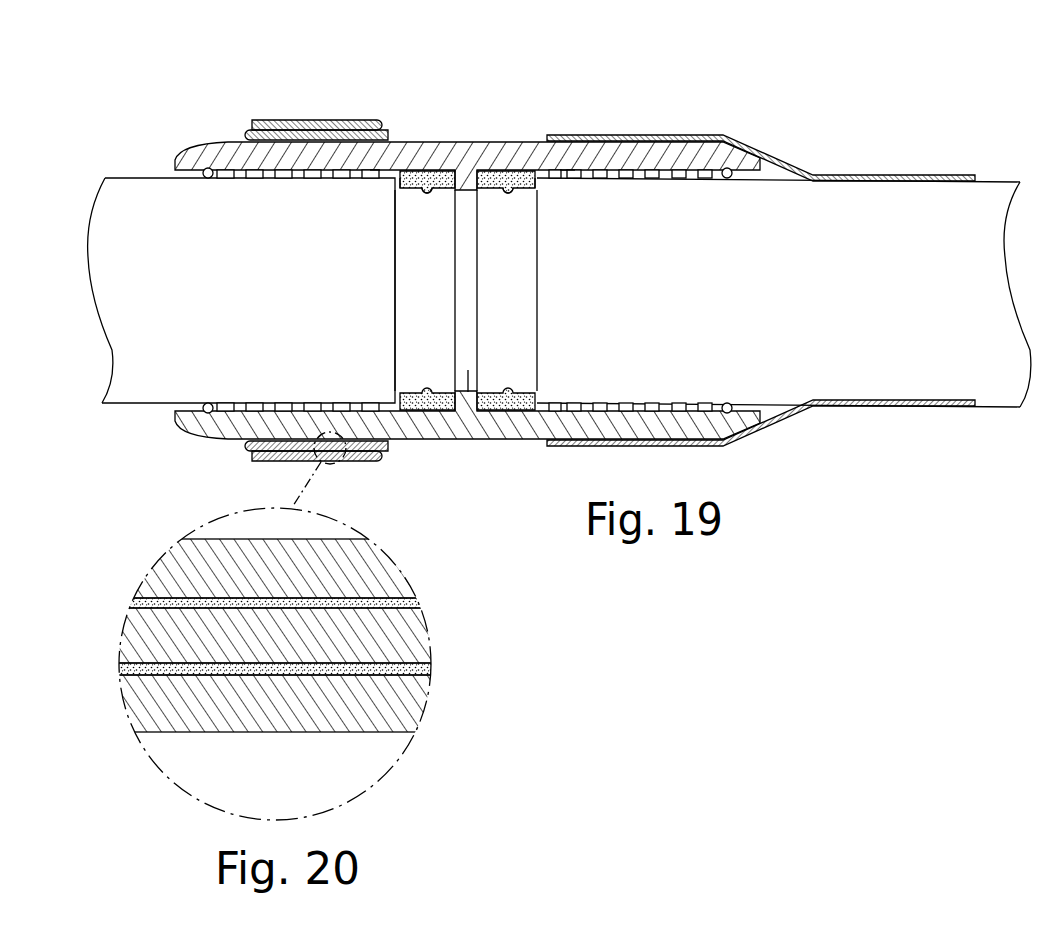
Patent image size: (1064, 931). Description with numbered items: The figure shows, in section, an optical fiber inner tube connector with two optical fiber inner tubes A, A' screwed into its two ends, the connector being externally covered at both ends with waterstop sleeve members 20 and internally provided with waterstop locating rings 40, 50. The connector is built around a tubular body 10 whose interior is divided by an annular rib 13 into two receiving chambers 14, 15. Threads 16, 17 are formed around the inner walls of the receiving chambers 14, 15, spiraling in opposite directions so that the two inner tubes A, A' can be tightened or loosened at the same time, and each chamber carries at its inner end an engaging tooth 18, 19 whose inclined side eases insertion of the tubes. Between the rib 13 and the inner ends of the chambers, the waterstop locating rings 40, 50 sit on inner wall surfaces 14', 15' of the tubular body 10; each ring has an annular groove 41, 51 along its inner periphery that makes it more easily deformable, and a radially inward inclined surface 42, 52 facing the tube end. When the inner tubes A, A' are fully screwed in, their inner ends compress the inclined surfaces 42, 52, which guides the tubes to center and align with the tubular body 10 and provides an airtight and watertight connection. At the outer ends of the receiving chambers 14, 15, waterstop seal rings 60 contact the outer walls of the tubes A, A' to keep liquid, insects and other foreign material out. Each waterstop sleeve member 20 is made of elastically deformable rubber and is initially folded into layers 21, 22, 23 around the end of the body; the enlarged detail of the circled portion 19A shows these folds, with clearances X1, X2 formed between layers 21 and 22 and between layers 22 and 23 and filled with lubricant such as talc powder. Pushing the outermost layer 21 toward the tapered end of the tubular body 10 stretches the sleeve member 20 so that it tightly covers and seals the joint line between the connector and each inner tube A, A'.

In FIG. 19, the tubular body 10 is at (460, 160).
In FIG. 19, the rib 13 is at (468, 392).
In FIG. 19, the receiving chamber 14 is at (248, 258).
In FIG. 19, the inner wall surface 14' is at (371, 290).
In FIG. 19, the receiving chamber 15 is at (778, 259).
In FIG. 19, the inner wall surface 15' is at (565, 290).
In FIG. 19, the thread 16 is at (236, 170).
In FIG. 19, the thread 17 is at (676, 170).
In FIG. 19, the engaging tooth 18 is at (370, 170).
In FIG. 19, the engaging tooth 19 is at (568, 170).
In FIG. 19, the circled portion 19A is at (343, 462).
In FIG. 20, the circled portion 19A is at (385, 775).
In FIG. 19, the waterstop sleeve member 20 is at (287, 120).
In FIG. 20, the layer 21 is at (180, 565).
In FIG. 20, the layer 22 is at (148, 630).
In FIG. 20, the layer 23 is at (400, 706).
In FIG. 19, the waterstop locating ring 40 is at (410, 171).
In FIG. 19, the annular groove 41 is at (427, 189).
In FIG. 19, the inclined surface 42 is at (397, 187).
In FIG. 19, the waterstop locating ring 50 is at (490, 190).
In FIG. 19, the annular groove 51 is at (508, 190).
In FIG. 19, the inclined surface 52 is at (540, 189).
In FIG. 19, the waterstop seal ring 60 is at (206, 168).
In FIG. 19, the optical fiber inner tube A is at (75, 290).
In FIG. 19, the optical fiber inner tube A' is at (1007, 294).
In FIG. 20, the clearance X1 is at (420, 604).
In FIG. 20, the clearance X2 is at (425, 673).